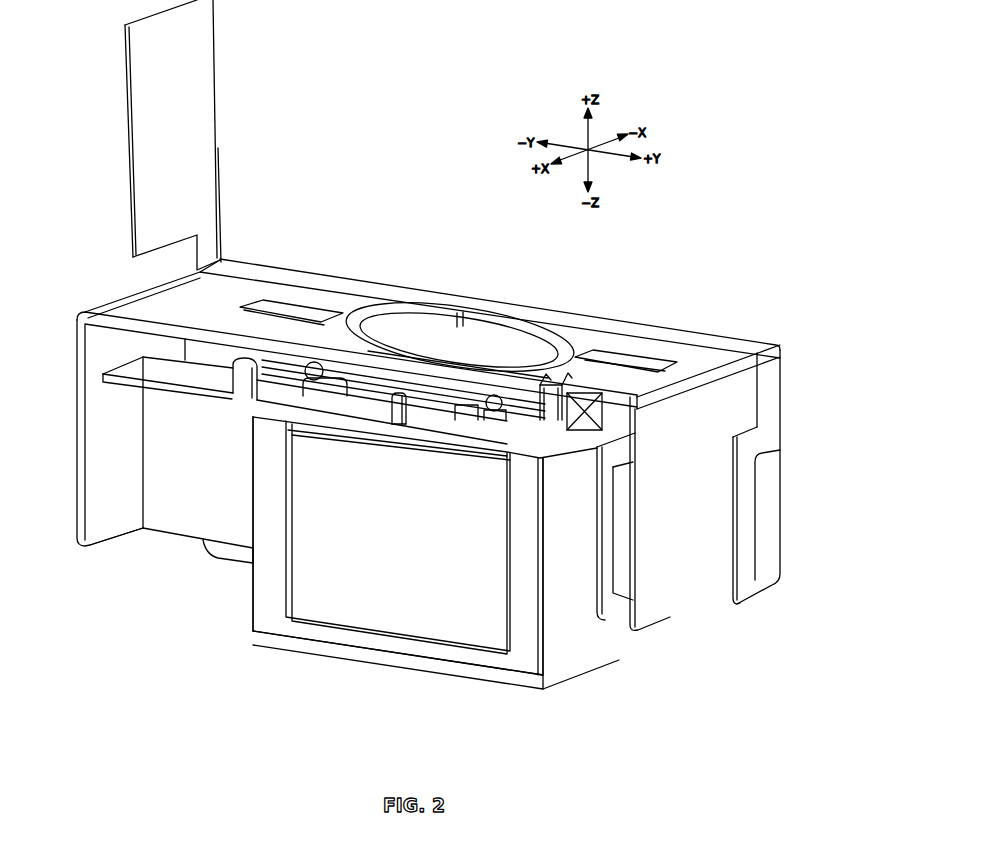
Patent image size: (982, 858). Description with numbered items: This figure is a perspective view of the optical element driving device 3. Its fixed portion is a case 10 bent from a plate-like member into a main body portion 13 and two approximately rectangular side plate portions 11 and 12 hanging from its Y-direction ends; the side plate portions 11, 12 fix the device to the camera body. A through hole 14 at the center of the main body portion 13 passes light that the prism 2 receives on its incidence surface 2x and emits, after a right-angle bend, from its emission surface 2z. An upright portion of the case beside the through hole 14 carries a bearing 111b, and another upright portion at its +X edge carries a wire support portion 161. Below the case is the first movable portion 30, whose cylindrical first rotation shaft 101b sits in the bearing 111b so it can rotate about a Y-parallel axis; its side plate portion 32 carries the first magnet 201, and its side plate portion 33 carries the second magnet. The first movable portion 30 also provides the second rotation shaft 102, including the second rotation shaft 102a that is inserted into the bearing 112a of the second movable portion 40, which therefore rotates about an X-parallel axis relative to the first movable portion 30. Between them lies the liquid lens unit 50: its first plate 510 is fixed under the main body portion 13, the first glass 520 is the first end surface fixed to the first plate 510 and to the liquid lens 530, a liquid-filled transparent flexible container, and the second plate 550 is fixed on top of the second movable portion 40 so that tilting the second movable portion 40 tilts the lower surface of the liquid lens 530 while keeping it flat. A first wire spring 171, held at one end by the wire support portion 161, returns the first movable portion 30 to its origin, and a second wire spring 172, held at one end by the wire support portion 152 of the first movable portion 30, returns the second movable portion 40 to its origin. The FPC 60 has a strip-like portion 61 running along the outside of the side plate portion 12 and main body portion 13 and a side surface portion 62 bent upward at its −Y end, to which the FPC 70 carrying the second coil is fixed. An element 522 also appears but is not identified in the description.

The prism 2 is at (436, 562).
The incidence surface 2x is at (398, 621).
The emission surface 2z is at (288, 524).
The optical element driving device 3 is at (376, 155).
The case 10 is at (408, 438).
The side plate portion 11 is at (151, 467).
The side plate portion 12 is at (736, 507).
The main body portion 13 is at (622, 356).
The through hole 14 is at (459, 307).
The first movable portion 30 is at (276, 425).
The side plate portion 32 is at (616, 570).
The side plate portion 33 is at (111, 588).
The second movable portion 40 is at (488, 554).
The liquid lens unit 50 is at (453, 298).
The FPC 60 is at (201, 135).
The strip-like portion 61 is at (784, 515).
The side surface portion 62 is at (110, 141).
The FPC 70 is at (206, 581).
The first rotation shaft 101b is at (705, 393).
The second rotation shaft 102 is at (416, 572).
The second rotation shaft 102a is at (411, 548).
The bearing 111b is at (518, 315).
The bearing 112a is at (446, 549).
The wire support portion 152 is at (192, 409).
The wire support portion 161 is at (552, 346).
The first wire spring 171 is at (780, 440).
The second wire spring 172 is at (147, 385).
The first magnet 201 is at (644, 588).
The first plate 510 is at (459, 270).
The first glass 520 is at (487, 303).
The ball protrusion 522 is at (549, 395).
The liquid lens 530 is at (291, 429).
The second plate 550 is at (291, 449).